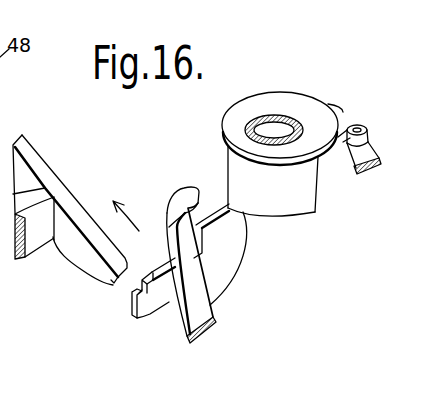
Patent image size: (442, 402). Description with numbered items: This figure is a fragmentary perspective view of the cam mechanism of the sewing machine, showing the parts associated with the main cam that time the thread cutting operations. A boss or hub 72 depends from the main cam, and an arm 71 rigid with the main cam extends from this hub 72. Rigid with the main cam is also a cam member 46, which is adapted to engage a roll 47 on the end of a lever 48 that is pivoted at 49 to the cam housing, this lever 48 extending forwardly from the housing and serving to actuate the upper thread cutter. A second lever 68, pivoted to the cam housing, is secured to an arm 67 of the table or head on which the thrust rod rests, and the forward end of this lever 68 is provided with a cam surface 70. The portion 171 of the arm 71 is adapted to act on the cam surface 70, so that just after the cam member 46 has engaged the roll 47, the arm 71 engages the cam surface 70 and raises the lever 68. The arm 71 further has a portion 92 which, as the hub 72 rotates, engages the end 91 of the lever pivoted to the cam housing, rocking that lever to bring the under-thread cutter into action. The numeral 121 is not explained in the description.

The cam member 46 is at (345, 129).
The roll 47 is at (350, 148).
The lever 48 is at (373, 178).
The pivot 49 is at (0, 97).
The adjacent figure element 121 is at (16, 116).
The arm 67 is at (48, 239).
The lever 68 is at (32, 161).
The cam surface 70 is at (124, 282).
The arm 71 is at (152, 316).
The portion of arm 171 is at (132, 292).
The boss or hub 72 is at (283, 117).
The end of lever 91 is at (182, 190).
The portion of arm 92 is at (208, 234).